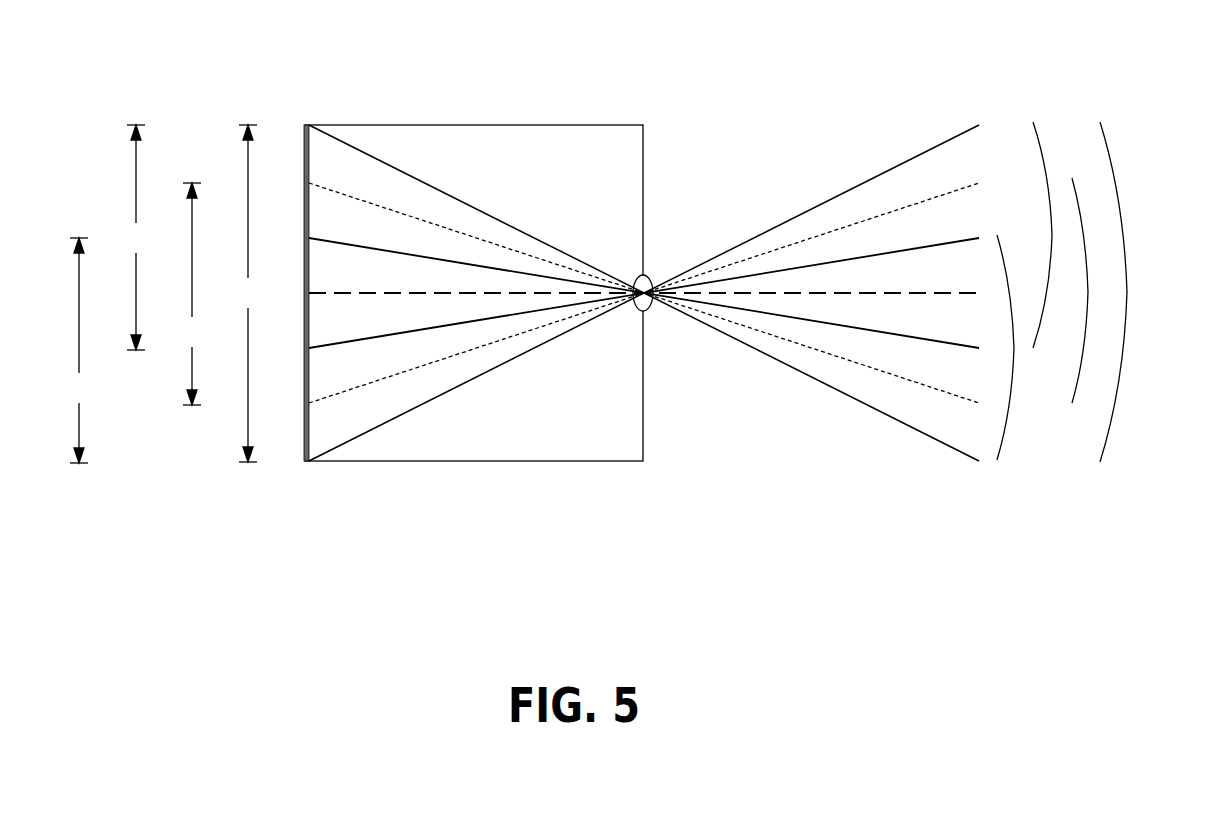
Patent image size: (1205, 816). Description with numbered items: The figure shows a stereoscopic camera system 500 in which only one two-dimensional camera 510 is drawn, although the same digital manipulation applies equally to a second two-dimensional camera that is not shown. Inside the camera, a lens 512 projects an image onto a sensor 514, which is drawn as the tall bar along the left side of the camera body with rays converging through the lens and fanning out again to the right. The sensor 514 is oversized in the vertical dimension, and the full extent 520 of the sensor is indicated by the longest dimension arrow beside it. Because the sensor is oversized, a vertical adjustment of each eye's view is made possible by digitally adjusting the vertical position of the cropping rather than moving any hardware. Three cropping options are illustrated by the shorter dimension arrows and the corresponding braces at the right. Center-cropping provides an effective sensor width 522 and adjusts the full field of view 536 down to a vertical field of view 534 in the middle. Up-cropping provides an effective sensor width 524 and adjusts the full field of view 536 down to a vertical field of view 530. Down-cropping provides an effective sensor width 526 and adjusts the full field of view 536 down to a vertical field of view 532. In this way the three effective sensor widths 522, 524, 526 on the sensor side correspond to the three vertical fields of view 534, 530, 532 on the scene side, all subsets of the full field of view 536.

The stereoscopic camera system 500 is at (620, 62).
The 2-D camera 510 is at (474, 293).
The lens 512 is at (654, 325).
The sensor 514 is at (294, 466).
The full display height 520 is at (247, 293).
The effective sensor width 522 is at (191, 294).
The effective sensor width 524 is at (135, 237).
The effective sensor width 526 is at (78, 350).
The vertical field of view 530 is at (1005, 347).
The vertical field of view 532 is at (1044, 235).
The vertical field of view 534 is at (1085, 290).
The full field of view 536 is at (1137, 292).